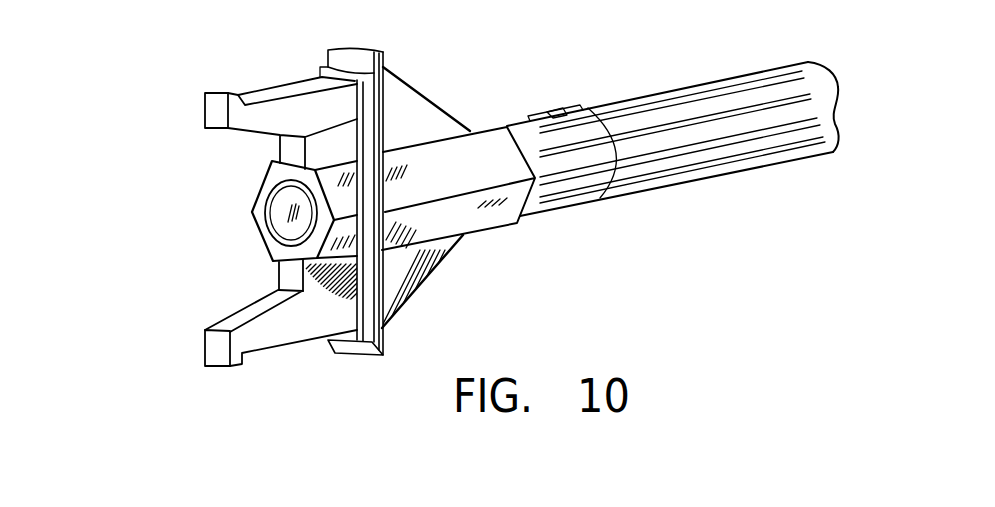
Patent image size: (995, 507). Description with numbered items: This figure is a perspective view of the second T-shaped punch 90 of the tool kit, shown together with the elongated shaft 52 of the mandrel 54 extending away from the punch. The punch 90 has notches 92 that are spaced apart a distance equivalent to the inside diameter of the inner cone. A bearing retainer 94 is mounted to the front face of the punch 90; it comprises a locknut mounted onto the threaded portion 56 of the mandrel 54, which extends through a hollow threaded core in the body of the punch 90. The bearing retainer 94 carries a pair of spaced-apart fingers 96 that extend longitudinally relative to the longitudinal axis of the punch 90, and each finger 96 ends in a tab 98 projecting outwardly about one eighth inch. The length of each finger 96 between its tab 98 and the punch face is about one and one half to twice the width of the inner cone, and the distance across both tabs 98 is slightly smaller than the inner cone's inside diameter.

The tubular shaft 52 is at (698, 80).
The mandrel 54 is at (522, 113).
The threaded portion 56 is at (275, 208).
The second T-shaped punch 90 is at (478, 122).
The notches 92 is at (327, 56).
The bearing retainer 94 is at (201, 224).
The fingers 96 is at (297, 88).
The tab 98 is at (218, 90).